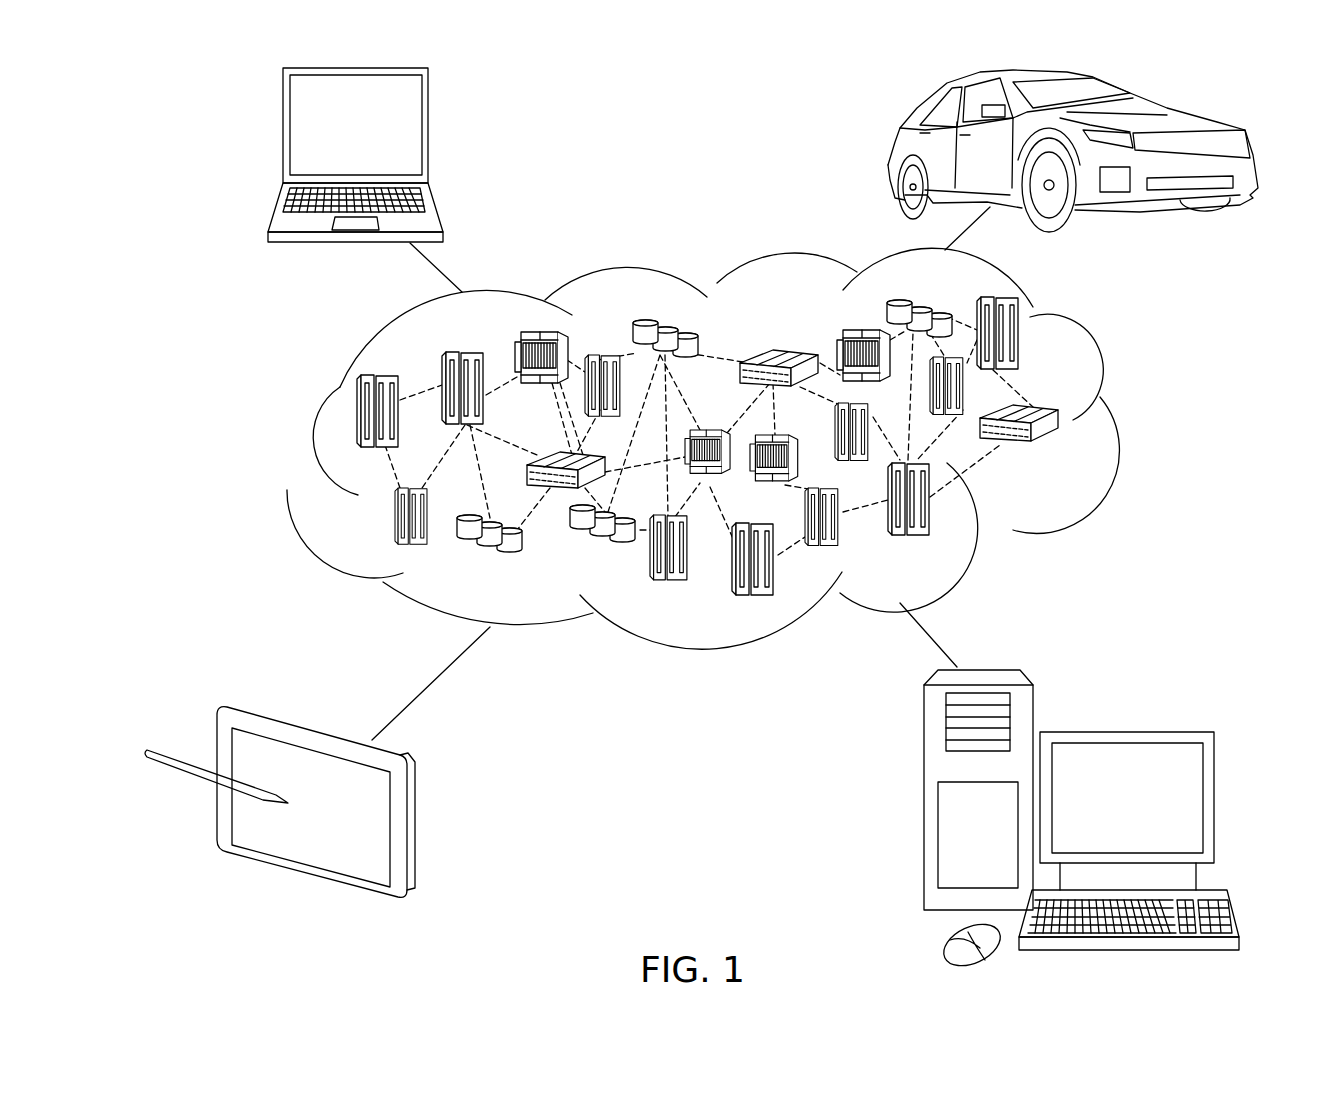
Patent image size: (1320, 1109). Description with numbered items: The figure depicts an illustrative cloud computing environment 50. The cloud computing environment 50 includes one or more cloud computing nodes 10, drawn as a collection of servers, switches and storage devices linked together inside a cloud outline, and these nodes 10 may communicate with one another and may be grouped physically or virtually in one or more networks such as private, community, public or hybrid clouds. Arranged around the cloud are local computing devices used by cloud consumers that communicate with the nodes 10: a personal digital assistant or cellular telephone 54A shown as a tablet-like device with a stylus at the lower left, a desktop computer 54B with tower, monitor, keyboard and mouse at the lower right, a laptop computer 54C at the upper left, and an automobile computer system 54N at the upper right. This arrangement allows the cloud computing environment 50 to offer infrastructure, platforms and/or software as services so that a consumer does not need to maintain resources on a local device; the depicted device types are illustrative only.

The cloud computing nodes 10 is at (1063, 455).
The cloud computing environment 50 is at (1126, 422).
The personal digital assistant or cellular telephone 54A is at (416, 828).
The desktop computer 54B is at (1123, 732).
The laptop computer 54C is at (428, 133).
The automobile computer system 54N is at (890, 152).